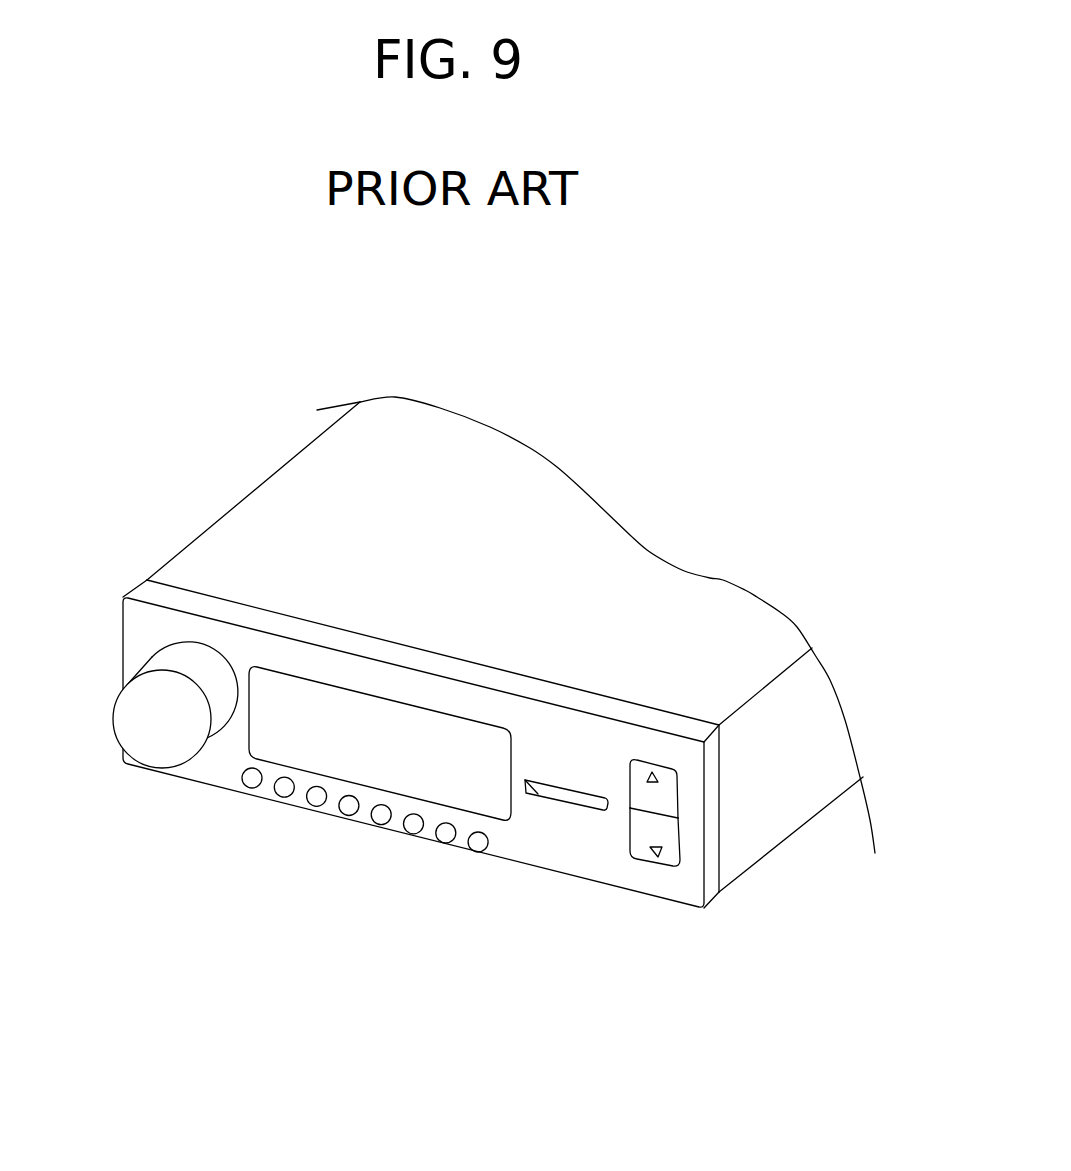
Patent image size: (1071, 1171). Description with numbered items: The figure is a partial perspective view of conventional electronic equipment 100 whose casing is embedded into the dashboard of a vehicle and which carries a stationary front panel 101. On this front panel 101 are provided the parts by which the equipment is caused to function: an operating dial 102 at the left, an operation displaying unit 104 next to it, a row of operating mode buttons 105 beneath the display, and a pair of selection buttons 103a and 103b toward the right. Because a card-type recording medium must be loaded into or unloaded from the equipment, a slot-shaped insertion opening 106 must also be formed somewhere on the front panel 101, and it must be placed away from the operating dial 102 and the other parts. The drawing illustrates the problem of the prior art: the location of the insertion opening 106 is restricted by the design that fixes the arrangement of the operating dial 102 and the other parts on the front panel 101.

The audio apparatus main body 100 is at (810, 870).
The front panel 101 is at (713, 897).
The operating dial 102 is at (123, 720).
The selection button 103a is at (673, 788).
The selection button 103b is at (673, 842).
The operation displaying unit 104 is at (258, 745).
The operating mode buttons 105 is at (478, 852).
The insertion opening 106 is at (568, 798).